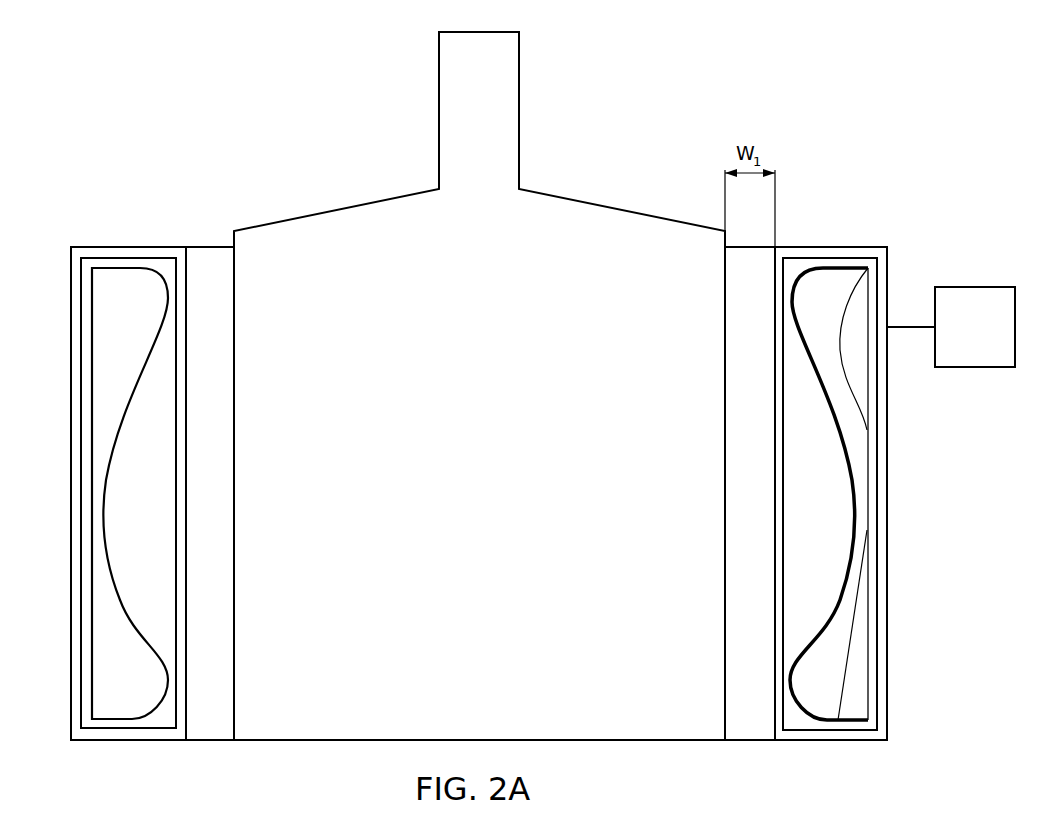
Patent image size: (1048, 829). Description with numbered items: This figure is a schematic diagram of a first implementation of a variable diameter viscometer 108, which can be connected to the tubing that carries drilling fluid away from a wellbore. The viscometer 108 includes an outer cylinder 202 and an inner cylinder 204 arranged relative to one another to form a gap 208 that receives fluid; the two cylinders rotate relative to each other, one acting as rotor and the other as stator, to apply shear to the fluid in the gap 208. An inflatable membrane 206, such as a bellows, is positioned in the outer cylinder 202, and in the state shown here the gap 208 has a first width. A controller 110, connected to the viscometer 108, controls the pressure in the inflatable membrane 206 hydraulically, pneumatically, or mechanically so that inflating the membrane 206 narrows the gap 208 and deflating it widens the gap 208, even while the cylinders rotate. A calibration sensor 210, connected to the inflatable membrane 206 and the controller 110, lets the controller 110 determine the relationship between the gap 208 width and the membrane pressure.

The variable diameter viscometer 108 is at (671, 132).
The controller 110 is at (996, 339).
The outer cylinder 202 is at (876, 247).
The inner cylinder 204 is at (636, 742).
The inflatable membrane 206 is at (862, 678).
The gap 208 is at (748, 742).
The calibration sensor 210 is at (800, 257).